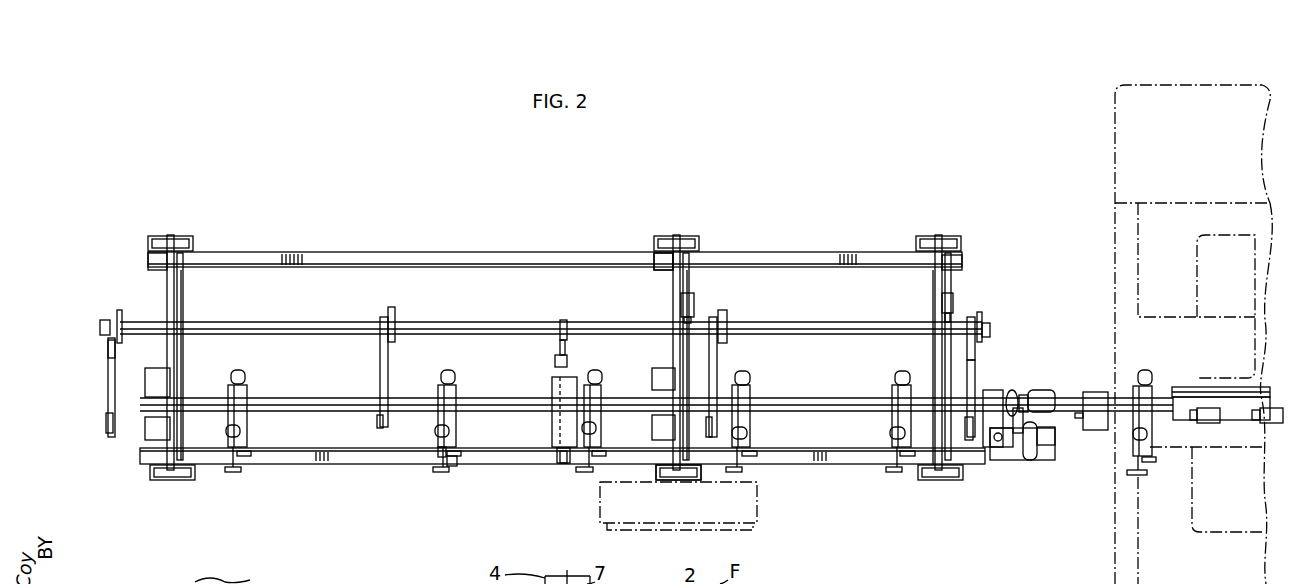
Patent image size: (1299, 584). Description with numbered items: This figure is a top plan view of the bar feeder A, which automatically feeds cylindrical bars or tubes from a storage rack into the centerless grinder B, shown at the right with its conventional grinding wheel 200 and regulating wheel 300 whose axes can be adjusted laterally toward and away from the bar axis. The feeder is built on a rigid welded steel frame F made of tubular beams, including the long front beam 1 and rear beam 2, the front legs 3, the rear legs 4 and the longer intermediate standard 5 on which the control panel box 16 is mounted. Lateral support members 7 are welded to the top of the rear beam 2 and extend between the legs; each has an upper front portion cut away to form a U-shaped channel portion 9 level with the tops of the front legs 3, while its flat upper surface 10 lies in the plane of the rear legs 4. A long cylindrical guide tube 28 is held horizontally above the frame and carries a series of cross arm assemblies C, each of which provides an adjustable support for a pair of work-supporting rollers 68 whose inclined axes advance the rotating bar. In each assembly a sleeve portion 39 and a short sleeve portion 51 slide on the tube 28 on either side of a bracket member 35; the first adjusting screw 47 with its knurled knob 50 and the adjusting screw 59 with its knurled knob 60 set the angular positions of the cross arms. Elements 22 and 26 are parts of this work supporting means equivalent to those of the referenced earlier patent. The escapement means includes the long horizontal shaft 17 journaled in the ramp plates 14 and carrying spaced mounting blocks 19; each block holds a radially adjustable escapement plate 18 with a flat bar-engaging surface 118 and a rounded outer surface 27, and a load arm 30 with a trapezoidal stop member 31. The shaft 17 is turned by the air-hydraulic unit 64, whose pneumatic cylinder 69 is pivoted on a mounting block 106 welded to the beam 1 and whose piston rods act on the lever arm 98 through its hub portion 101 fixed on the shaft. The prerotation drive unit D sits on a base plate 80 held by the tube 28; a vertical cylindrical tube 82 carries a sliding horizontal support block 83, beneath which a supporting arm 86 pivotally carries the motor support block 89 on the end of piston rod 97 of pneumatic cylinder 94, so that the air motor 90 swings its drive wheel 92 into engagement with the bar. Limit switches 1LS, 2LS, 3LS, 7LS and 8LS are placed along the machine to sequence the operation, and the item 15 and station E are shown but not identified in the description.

The front horizontal beam 1 is at (318, 464).
The rear horizontal beam 2 is at (352, 252).
The front legs 3 is at (162, 481).
The rear legs 4 is at (186, 236).
The intermediate leg or standard 5 is at (672, 481).
The lateral support members 7 is at (178, 282).
The U-shaped channel portion 9 is at (181, 436).
The flat horizontal upper surface 10 is at (665, 258).
The ramp plates 14 is at (158, 275).
The slide bar 15 is at (170, 292).
The control panel box 16 is at (758, 532).
The escapement shaft 17 is at (425, 325).
The escapement plate 18 is at (111, 311).
The mounting blocks 19 is at (385, 322).
The work supporting element 22 is at (146, 430).
The work supporting element 26 is at (150, 384).
The rounded bar-engaging outer surface 27 is at (100, 326).
The guide tube 28 is at (325, 400).
The load arm 30 is at (108, 352).
The stop member 31 is at (106, 425).
The bracket member 35 is at (252, 413).
The sleeve portion 39 is at (228, 402).
The first adjusting screw 47 is at (442, 458).
The knurled knob 50 is at (232, 474).
The short sleeve portion 51 is at (246, 400).
The adjusting screw 59 is at (242, 458).
The knurled knob 60 is at (452, 474).
The air-hydraulic unit 64 is at (548, 426).
The work-supporting rollers 68 is at (237, 372).
The pneumatic cylinder 69 is at (553, 470).
The base plate 80 is at (994, 390).
The vertical cylindrical tube 82 is at (996, 446).
The horizontal support block 83 is at (1040, 452).
The supporting arm 86 is at (1012, 436).
The motor support block 89 is at (1024, 395).
The air motor 90 is at (1050, 390).
The drive wheel 92 is at (1014, 392).
The pneumatic cylinder 94 is at (1030, 458).
The piston rod 97 is at (1032, 418).
The lever arm 98 is at (558, 350).
The hub portion 101 is at (562, 308).
The mounting block 106 is at (565, 472).
The flat bar-engaging surface 118 is at (108, 340).
The grinding wheel 200 is at (1197, 255).
The regulating wheel 300 is at (1232, 548).
The limit switch 1LS is at (1208, 424).
The limit switch 2LS is at (954, 300).
The limit switch 3LS is at (694, 296).
The limit switch 7LS is at (1270, 424).
The limit switch 8LS is at (1096, 431).
The bar feeder A is at (128, 190).
The centerless grinder B is at (1116, 84).
The cross arm assemblies C is at (252, 360).
The prerotation drive unit D is at (1008, 498).
The stop station E is at (374, 341).
The frame F is at (473, 248).